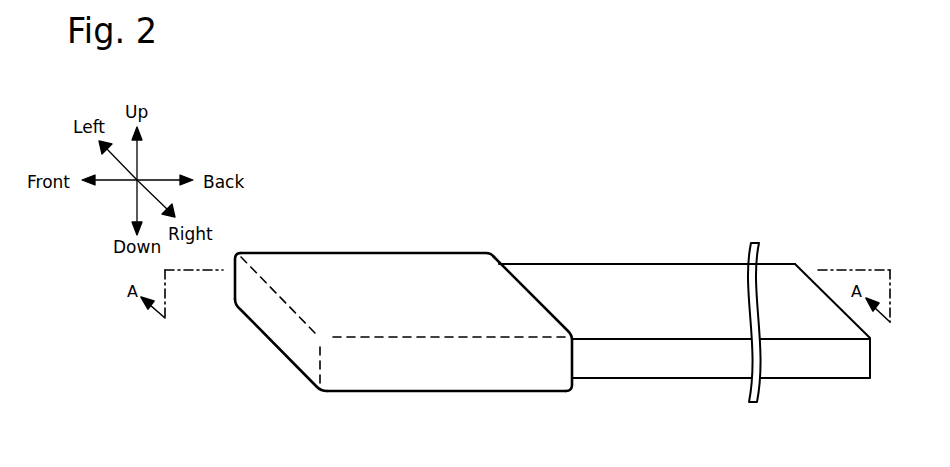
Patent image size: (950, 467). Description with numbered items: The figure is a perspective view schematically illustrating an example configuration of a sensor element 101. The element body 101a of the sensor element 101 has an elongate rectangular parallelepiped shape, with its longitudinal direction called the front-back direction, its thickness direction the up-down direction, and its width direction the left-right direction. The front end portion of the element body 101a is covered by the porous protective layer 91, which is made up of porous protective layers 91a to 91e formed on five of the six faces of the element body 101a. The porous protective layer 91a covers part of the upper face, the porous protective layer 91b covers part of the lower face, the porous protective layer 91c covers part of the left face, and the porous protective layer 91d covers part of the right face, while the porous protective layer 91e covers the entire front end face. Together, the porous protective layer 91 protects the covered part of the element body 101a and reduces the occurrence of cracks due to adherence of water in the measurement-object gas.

The porous protective layer 91 is at (421, 207).
The porous protective layer 91a is at (342, 290).
The porous protective layer 91b is at (288, 362).
The porous protective layer 91c is at (234, 284).
The porous protective layer 91d is at (458, 368).
The porous protective layer 91e is at (275, 320).
The sensor element 101 is at (776, 164).
The element body 101a is at (618, 287).